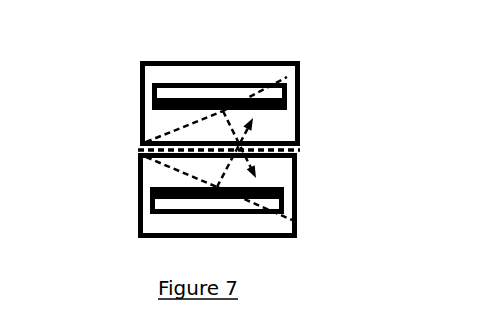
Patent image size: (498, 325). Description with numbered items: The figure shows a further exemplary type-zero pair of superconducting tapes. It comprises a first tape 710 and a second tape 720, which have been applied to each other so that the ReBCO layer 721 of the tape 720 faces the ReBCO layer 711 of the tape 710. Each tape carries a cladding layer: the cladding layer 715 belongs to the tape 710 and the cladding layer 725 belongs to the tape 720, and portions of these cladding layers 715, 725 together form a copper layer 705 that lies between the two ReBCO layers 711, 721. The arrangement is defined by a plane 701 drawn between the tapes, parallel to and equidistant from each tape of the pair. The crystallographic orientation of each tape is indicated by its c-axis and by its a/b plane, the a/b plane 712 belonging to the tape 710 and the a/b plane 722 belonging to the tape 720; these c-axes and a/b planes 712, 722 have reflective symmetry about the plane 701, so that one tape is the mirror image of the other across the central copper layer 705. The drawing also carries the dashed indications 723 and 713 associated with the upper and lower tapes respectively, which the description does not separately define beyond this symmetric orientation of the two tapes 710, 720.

The tape 720 is at (114, 63).
The cladding layer 725 is at (199, 73).
The ReBCO layer 721 is at (151, 103).
The tape 710 is at (117, 248).
The cladding layer 715 is at (230, 225).
The ReBCO layer 711 is at (151, 194).
The plane 701 is at (300, 150).
The copper layer 705 is at (132, 112).
The a/b plane 722 is at (263, 172).
The a/b plane 712 is at (258, 124).
The transmitted light beam 723 is at (285, 76).
The transmitted light beam 713 is at (292, 220).